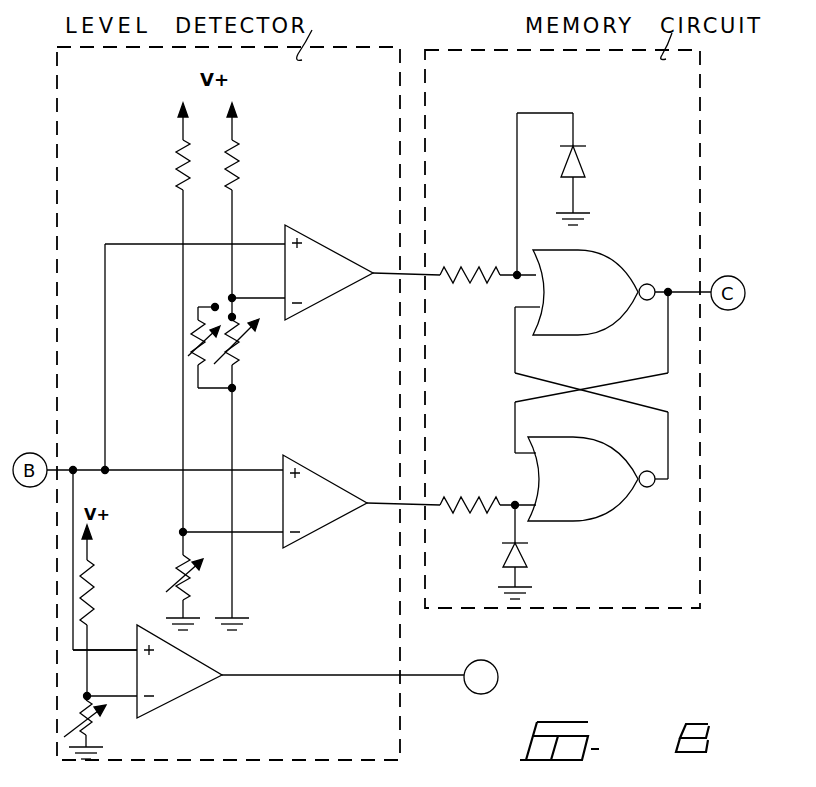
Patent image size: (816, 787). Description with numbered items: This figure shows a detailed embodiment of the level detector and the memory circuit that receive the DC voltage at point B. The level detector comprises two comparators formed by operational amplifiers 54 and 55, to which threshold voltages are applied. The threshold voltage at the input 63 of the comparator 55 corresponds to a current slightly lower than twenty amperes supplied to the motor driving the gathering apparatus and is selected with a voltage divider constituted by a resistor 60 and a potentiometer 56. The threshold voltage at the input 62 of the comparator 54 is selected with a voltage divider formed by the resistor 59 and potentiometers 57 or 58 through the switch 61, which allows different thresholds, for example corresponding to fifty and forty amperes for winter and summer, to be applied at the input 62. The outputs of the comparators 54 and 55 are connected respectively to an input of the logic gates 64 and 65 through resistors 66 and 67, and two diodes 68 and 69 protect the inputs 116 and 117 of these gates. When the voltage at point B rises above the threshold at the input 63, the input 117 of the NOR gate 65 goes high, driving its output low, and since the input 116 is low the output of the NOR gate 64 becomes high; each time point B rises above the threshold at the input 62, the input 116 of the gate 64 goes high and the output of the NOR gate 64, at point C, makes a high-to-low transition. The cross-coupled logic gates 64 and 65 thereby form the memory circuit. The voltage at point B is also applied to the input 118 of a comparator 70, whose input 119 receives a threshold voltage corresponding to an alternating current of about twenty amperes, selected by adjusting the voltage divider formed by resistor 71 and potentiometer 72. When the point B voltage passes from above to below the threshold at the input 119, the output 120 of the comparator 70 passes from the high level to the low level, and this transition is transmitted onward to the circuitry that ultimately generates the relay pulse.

The operational amplifier 54 is at (328, 260).
The operational amplifier 55 is at (358, 462).
The potentiometer 56 is at (206, 578).
The potentiometer 57 is at (245, 353).
The potentiometer 58 is at (190, 339).
The resistor 59 is at (240, 176).
The resistor 60 is at (178, 158).
The switch 61 is at (216, 302).
The input of comparator 54 62 is at (250, 298).
The input of comparator 55 63 is at (248, 528).
The NOR gate 64 is at (618, 282).
The NOR gate 65 is at (586, 512).
The resistor 66 is at (464, 282).
The resistor 67 is at (464, 518).
The diode 68 is at (582, 160).
The diode 69 is at (526, 562).
The comparator 70 is at (190, 666).
The resistor 71 is at (98, 566).
The potentiometer 72 is at (90, 730).
The input of logic gate 64 116 is at (516, 272).
The input of logic gate 65 117 is at (514, 502).
The input of comparator 70 118 is at (112, 648).
The input of comparator 70 119 is at (122, 668).
The output of comparator 70 120 is at (488, 682).